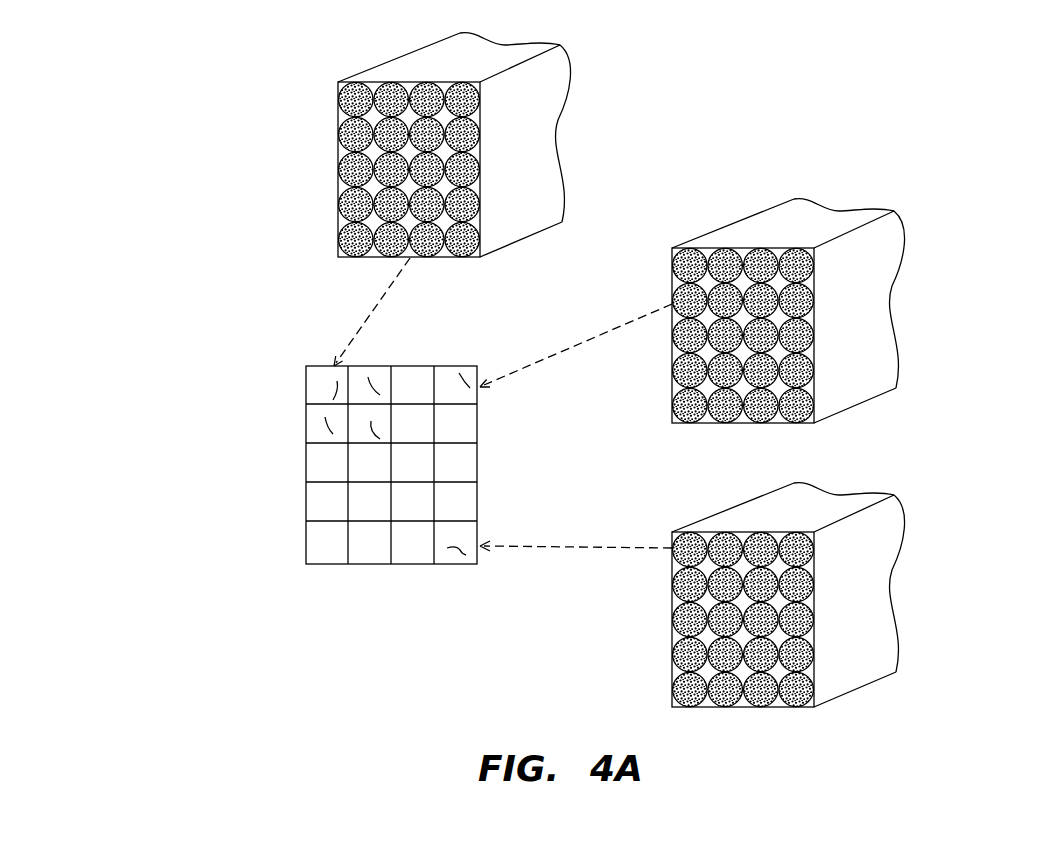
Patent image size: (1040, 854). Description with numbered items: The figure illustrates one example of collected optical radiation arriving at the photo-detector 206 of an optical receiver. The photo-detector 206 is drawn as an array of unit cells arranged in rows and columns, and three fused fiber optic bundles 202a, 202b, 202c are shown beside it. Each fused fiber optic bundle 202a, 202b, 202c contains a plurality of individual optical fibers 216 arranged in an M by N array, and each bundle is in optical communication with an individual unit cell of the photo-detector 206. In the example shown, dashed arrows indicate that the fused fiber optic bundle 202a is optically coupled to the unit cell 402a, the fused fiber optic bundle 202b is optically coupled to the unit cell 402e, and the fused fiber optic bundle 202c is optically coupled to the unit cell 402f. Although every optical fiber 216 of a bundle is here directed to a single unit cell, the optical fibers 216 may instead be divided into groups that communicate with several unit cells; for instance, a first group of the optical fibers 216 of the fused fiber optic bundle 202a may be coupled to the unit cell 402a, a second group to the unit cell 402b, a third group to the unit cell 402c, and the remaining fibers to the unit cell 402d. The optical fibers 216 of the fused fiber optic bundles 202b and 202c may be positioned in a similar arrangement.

The fused fiber optic bundle 202a is at (575, 72).
The fused fiber optic bundle 202b is at (900, 223).
The fused fiber optic bundle 202c is at (900, 505).
The optical fibers 216 is at (338, 82).
The photo-detector 206 is at (273, 348).
The unit cell 402a is at (333, 389).
The unit cell 402b is at (323, 427).
The unit cell 402c is at (377, 383).
The unit cell 402d is at (374, 427).
The unit cell 402e is at (473, 372).
The unit cell 402f is at (457, 553).